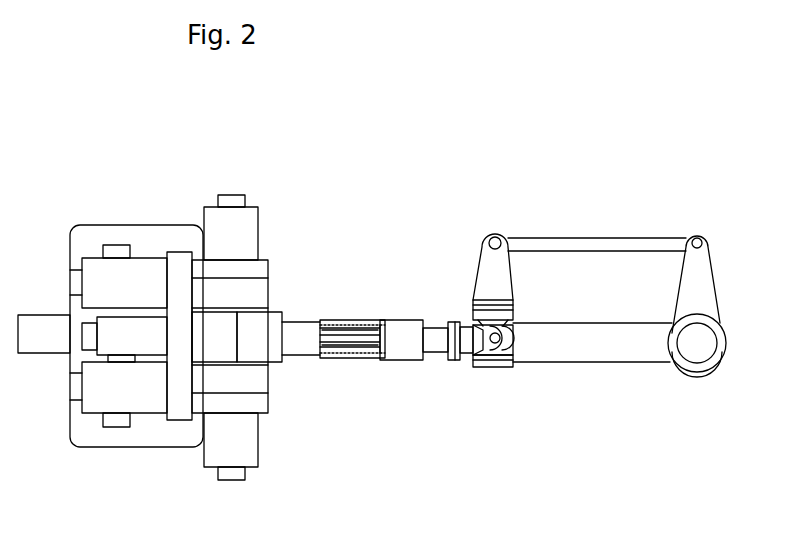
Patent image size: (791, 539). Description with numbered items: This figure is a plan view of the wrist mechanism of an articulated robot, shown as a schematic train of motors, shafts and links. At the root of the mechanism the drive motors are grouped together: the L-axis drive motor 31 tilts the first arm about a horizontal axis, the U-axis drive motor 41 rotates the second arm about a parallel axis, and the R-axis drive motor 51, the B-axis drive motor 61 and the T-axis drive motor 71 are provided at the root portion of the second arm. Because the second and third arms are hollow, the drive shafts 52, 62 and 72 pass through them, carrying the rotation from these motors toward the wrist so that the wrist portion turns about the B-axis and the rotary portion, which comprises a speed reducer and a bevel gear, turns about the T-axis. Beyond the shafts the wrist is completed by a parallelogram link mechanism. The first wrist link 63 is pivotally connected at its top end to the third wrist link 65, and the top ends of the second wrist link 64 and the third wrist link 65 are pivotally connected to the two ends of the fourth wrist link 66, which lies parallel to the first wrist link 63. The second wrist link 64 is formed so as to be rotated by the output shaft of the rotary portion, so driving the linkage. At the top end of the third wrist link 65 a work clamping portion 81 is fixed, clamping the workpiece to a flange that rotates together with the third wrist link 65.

The L-axis drive motor 31 is at (248, 453).
The U-axis drive motor 41 is at (215, 215).
The R-axis drive motor 51 is at (137, 403).
The drive shaft 52 is at (335, 335).
The B-axis drive motor 61 is at (155, 272).
The drive shaft 62 is at (373, 328).
The first wrist link 63 is at (610, 353).
The second wrist link 64 is at (487, 268).
The third wrist link 65 is at (698, 277).
The fourth wrist link 66 is at (587, 242).
The T-axis drive motor 71 is at (123, 330).
The drive shaft 72 is at (353, 348).
The work clamping portion 81 is at (715, 367).